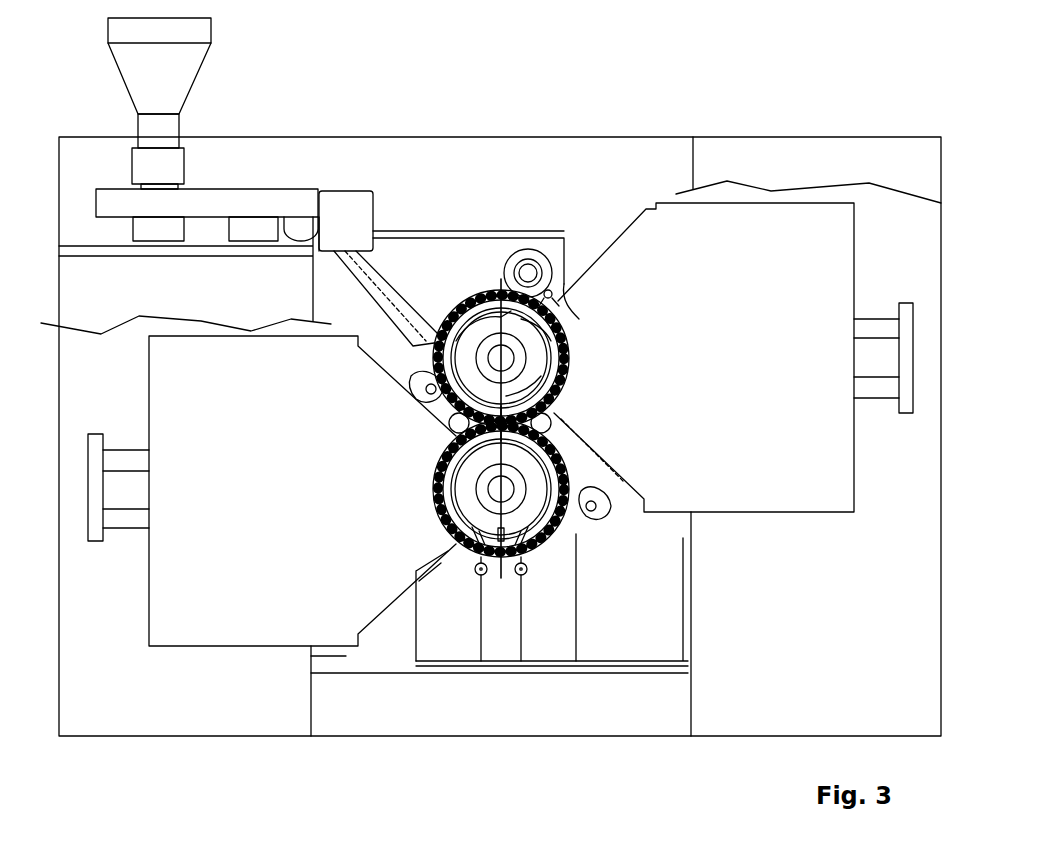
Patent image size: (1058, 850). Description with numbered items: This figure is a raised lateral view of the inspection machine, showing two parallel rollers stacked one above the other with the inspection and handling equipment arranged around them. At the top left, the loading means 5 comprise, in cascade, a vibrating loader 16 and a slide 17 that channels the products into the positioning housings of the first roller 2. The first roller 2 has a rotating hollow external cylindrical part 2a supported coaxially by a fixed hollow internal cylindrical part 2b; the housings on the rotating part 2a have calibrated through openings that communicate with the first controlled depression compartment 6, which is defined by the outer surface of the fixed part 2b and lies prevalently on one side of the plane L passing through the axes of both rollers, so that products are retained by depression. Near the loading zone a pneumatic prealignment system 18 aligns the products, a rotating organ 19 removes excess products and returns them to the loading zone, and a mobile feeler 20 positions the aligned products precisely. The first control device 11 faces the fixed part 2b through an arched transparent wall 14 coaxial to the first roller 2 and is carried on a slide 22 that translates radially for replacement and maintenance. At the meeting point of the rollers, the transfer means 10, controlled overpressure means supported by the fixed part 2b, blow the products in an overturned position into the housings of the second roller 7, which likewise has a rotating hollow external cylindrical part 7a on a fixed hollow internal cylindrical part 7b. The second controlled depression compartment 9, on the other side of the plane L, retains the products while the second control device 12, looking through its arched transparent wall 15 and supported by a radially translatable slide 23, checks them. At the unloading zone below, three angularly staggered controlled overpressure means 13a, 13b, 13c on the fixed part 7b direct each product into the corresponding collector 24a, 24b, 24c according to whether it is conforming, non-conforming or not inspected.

The loading means 5 is at (312, 170).
The vibrating loader 16 is at (228, 205).
The slide 17 is at (372, 270).
The first roller 2 is at (479, 279).
The rotating hollow external cylindrical part 2a is at (485, 305).
The fixed hollow internal cylindrical part 2b is at (470, 372).
The rotating organ 19 is at (520, 262).
The mobile feeler 20 is at (550, 292).
The first controlled depression compartment 6 is at (575, 355).
The pneumatic prealignment system 18 is at (470, 337).
The arched transparent wall 14 is at (525, 325).
The transfer means 10 is at (505, 395).
The slide 22 is at (875, 318).
The first control device 11 is at (810, 350).
The slide 23 is at (120, 450).
The second control device 12 is at (272, 475).
The arched transparent wall 15 is at (433, 455).
The second controlled depression compartment 9 is at (460, 487).
The plane L is at (500, 455).
The fixed hollow internal cylindrical part 7b is at (535, 495).
The controlled overpressure means 13a is at (455, 542).
The controlled overpressure means 13b is at (505, 530).
The controlled overpressure means 13c is at (490, 527).
The rotating hollow external cylindrical part 7a is at (470, 560).
The second roller 7 is at (460, 545).
The collector 24a is at (475, 650).
The collector 24b is at (505, 637).
The collector 24c is at (550, 640).